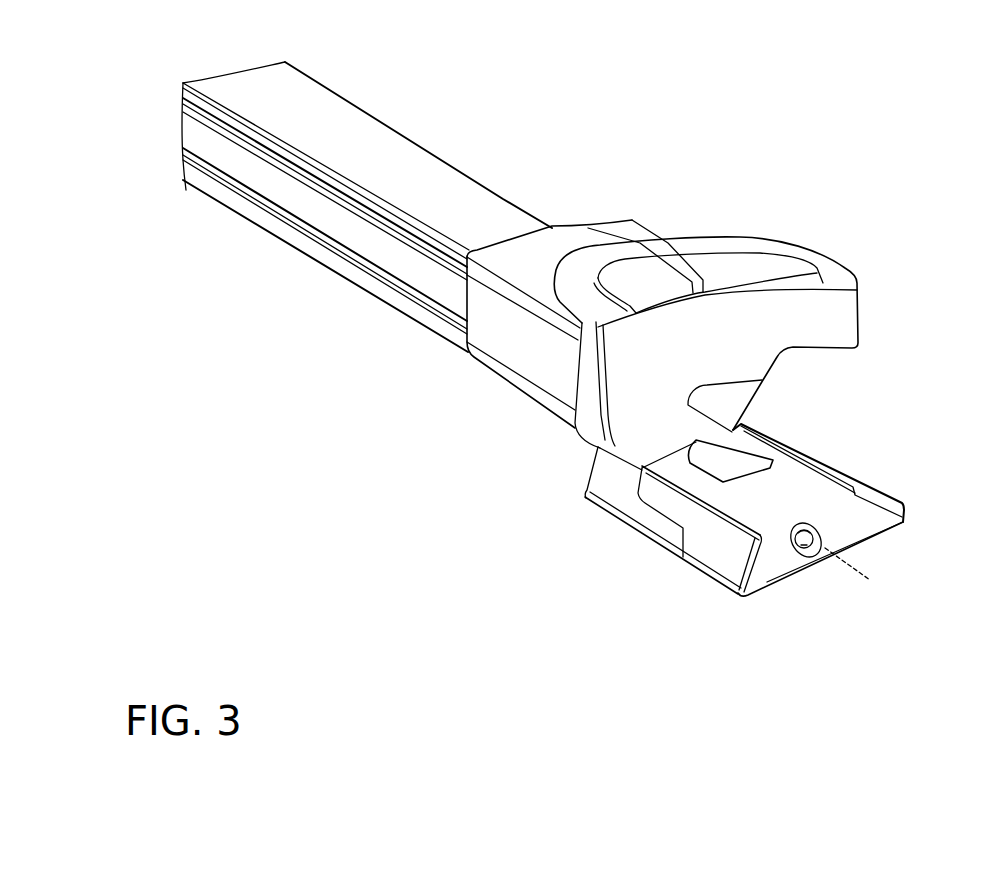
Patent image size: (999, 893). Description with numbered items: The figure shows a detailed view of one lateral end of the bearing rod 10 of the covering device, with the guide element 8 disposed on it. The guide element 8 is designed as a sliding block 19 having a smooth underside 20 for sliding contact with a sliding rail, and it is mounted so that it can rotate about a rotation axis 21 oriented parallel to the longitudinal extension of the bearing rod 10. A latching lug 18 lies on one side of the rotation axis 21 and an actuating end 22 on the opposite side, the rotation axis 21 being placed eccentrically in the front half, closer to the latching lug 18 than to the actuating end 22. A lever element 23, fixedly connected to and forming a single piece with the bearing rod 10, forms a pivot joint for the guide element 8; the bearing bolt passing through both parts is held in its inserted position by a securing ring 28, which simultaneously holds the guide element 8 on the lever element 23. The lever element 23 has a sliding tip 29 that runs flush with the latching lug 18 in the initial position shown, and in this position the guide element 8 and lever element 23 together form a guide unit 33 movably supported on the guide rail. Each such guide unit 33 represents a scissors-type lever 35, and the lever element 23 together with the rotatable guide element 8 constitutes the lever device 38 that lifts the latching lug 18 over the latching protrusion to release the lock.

The guide element 8 is at (853, 416).
The bearing rod 10 is at (403, 153).
The latching lug 18 is at (708, 565).
The sliding block 19 is at (875, 515).
The smooth underside 20 is at (767, 583).
The rotation axis 21 is at (857, 572).
The actuating end 22 is at (853, 478).
The lever element 23 is at (638, 452).
The securing ring 28 is at (817, 533).
The sliding tip 29 is at (620, 508).
The guide unit 33 is at (607, 562).
The scissors-type lever 35 is at (631, 587).
The lever device 38 is at (538, 454).